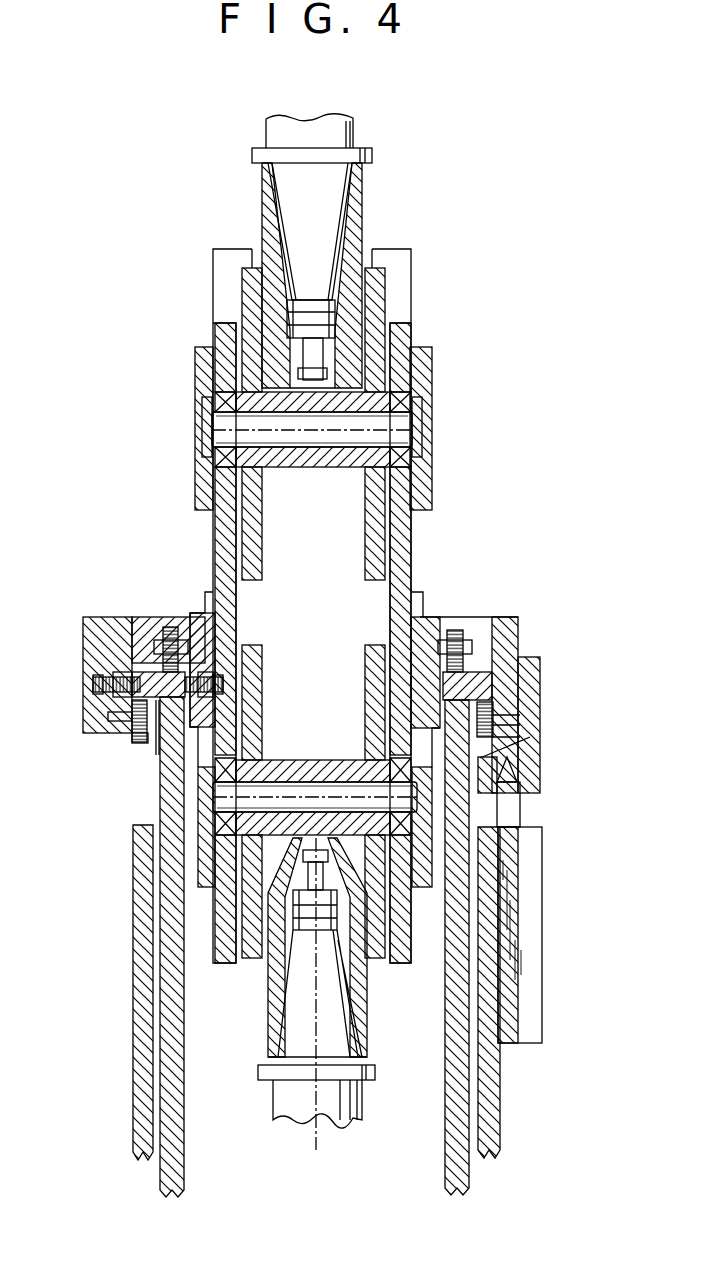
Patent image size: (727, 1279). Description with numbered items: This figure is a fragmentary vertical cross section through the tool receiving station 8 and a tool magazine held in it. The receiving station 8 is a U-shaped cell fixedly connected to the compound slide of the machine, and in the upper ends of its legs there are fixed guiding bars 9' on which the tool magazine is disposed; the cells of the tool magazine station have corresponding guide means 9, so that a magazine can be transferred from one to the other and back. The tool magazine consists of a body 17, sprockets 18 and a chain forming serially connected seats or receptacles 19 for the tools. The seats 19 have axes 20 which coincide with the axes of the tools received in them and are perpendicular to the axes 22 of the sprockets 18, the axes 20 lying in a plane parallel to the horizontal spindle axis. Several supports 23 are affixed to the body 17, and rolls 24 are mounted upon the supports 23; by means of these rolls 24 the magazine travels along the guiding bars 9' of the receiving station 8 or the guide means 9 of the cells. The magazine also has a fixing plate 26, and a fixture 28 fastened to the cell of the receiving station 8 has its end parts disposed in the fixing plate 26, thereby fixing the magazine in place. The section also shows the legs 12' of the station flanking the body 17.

The receiving station 8 is at (185, 973).
The guide means 9 is at (158, 728).
The guiding bars 9' is at (487, 705).
The leg 12' is at (318, 992).
The body 17 is at (403, 550).
The sprockets 18 is at (375, 312).
The seats 19 is at (268, 218).
The axes 20 is at (320, 1112).
The axes 22 is at (296, 795).
The supports 23 is at (148, 623).
The rolls 24 is at (170, 627).
The fixing plate 26 is at (533, 770).
The fixture 28 is at (523, 978).